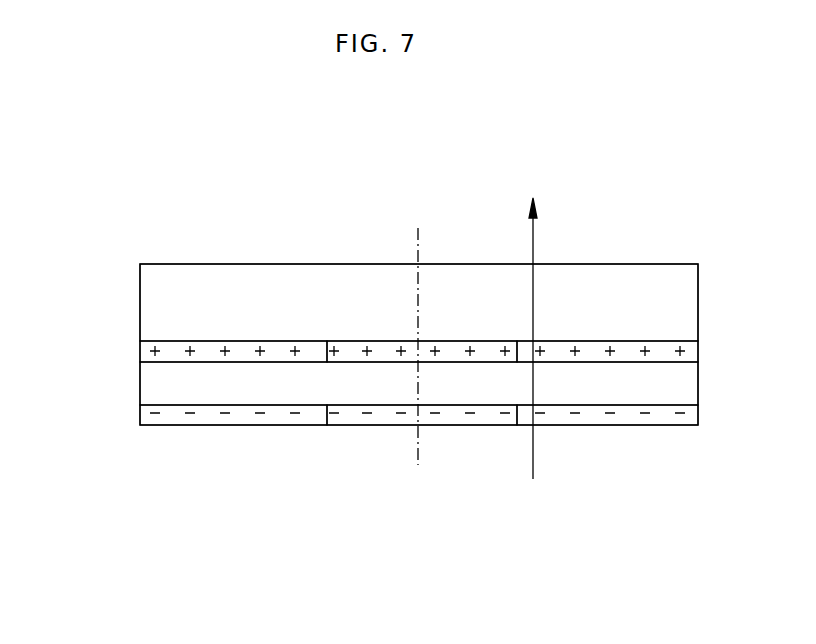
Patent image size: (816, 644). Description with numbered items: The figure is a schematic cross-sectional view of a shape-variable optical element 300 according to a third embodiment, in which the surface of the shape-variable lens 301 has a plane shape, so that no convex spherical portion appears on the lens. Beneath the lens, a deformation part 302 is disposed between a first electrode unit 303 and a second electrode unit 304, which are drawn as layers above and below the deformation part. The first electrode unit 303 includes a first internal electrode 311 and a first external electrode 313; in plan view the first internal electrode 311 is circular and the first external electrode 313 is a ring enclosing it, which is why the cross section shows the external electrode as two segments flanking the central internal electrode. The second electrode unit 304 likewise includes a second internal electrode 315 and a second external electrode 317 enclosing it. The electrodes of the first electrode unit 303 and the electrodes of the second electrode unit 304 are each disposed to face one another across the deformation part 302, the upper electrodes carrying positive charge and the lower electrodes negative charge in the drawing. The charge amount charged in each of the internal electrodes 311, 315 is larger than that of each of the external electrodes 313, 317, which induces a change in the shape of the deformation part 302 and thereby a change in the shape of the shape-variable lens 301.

The shape-variable optical element 300 is at (138, 217).
The shape-variable lens 301 is at (660, 275).
The deformation part 302 is at (147, 388).
The first electrode unit 303 is at (220, 175).
The second electrode unit 304 is at (230, 545).
The first internal electrode 311 is at (384, 348).
The first external electrode 313 is at (243, 348).
The second internal electrode 315 is at (383, 420).
The second external electrode 317 is at (228, 420).